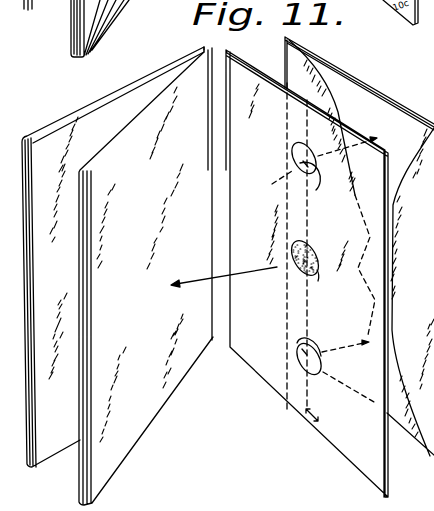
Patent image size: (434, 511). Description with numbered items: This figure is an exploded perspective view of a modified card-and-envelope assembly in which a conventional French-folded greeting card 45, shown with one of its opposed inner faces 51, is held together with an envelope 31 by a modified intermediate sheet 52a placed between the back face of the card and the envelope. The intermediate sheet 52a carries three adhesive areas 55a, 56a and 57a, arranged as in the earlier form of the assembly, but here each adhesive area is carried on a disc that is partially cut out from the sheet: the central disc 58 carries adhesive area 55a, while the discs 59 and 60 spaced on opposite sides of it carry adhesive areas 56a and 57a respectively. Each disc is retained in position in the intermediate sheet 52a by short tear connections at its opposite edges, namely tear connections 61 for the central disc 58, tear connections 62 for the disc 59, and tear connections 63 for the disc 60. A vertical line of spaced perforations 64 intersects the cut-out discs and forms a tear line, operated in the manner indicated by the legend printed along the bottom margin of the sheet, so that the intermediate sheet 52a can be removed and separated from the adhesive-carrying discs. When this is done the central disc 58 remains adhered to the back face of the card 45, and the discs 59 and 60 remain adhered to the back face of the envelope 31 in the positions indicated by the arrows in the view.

The envelope 31 is at (361, 79).
The folded sheet greeting card 45 is at (135, 100).
The inner face 51 is at (72, 37).
The modified intermediate sheet 52a is at (252, 46).
The adhesive area 55a is at (324, 240).
The adhesive area 56a is at (307, 169).
The adhesive area 57a is at (302, 347).
The central disc 58 is at (297, 272).
The disc 59 is at (310, 190).
The disc 60 is at (295, 363).
The tear connections 61 is at (316, 277).
The tear connections 62 is at (294, 150).
The tear connections 63 is at (319, 366).
The vertical line of spaced perforations 64 is at (313, 380).